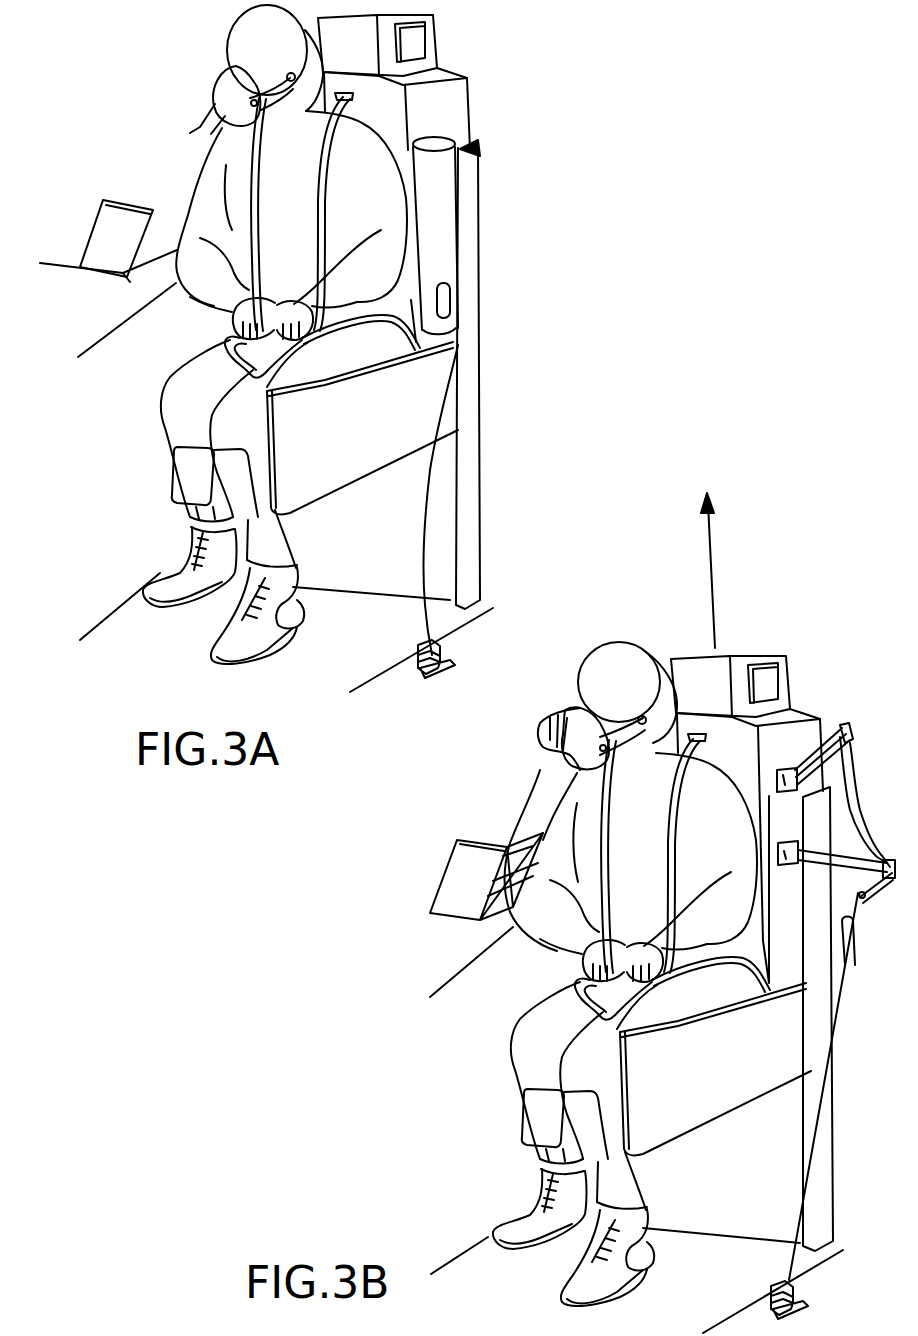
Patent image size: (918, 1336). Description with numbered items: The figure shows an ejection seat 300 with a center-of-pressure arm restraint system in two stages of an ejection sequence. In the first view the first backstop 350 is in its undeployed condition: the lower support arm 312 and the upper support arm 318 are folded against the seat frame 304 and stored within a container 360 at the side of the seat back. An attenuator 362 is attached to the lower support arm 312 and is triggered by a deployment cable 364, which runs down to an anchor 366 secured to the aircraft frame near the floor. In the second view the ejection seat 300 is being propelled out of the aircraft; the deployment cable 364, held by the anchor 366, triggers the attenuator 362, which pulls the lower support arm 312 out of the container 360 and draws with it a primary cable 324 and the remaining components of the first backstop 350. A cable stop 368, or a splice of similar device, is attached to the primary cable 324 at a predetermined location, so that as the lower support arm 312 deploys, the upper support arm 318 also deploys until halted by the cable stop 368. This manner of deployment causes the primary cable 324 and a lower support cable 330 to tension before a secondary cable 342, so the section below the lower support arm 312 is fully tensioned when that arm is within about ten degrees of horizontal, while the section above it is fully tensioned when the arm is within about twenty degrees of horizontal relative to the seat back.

In FIG. 3A, the ejection seat 300 is at (148, 112).
In FIG. 3B, the ejection seat 300 is at (638, 565).
In FIG. 3A, the seat frame 304 is at (455, 86).
In FIG. 3B, the lower support arm 312 is at (840, 833).
In FIG. 3B, the upper support arm 318 is at (868, 761).
In FIG. 3B, the primary cable 324 is at (768, 888).
In FIG. 3B, the lower support cable 330 is at (718, 1069).
In FIG. 3B, the secondary cable 342 is at (789, 770).
In FIG. 3A, the first backstop 350 is at (480, 155).
In FIG. 3A, the container 360 is at (432, 237).
In FIG. 3A, the attenuator 362 is at (448, 305).
In FIG. 3B, the attenuator 362 is at (860, 981).
In FIG. 3A, the deployment cable 364 is at (432, 485).
In FIG. 3B, the deployment cable 364 is at (803, 1086).
In FIG. 3A, the anchor 366 is at (445, 657).
In FIG. 3B, the anchor 366 is at (826, 1295).
In FIG. 3B, the cable stop 368 is at (757, 723).